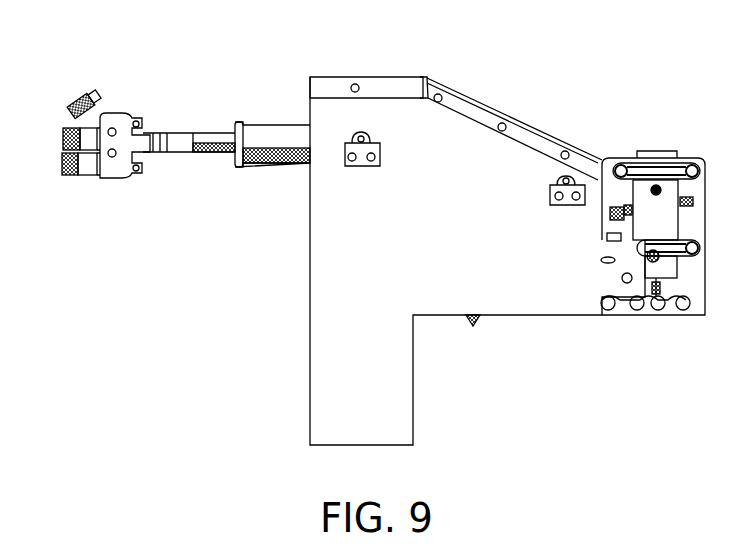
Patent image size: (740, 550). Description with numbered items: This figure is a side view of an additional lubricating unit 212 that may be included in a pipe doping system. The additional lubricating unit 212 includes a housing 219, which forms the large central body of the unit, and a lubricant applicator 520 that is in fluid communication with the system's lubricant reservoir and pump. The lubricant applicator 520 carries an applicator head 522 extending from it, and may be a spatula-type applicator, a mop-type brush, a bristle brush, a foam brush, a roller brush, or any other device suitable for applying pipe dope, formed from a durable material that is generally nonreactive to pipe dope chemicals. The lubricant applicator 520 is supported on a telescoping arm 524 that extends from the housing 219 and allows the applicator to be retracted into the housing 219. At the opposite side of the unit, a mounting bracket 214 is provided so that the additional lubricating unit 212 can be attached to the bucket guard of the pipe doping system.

The additional lubricating unit 212 is at (135, 289).
The mounting bracket 214 is at (628, 148).
The housing 219 is at (407, 110).
The lubricant applicator 520 is at (97, 108).
The applicator head 522 is at (78, 107).
The telescoping arm 524 is at (267, 125).